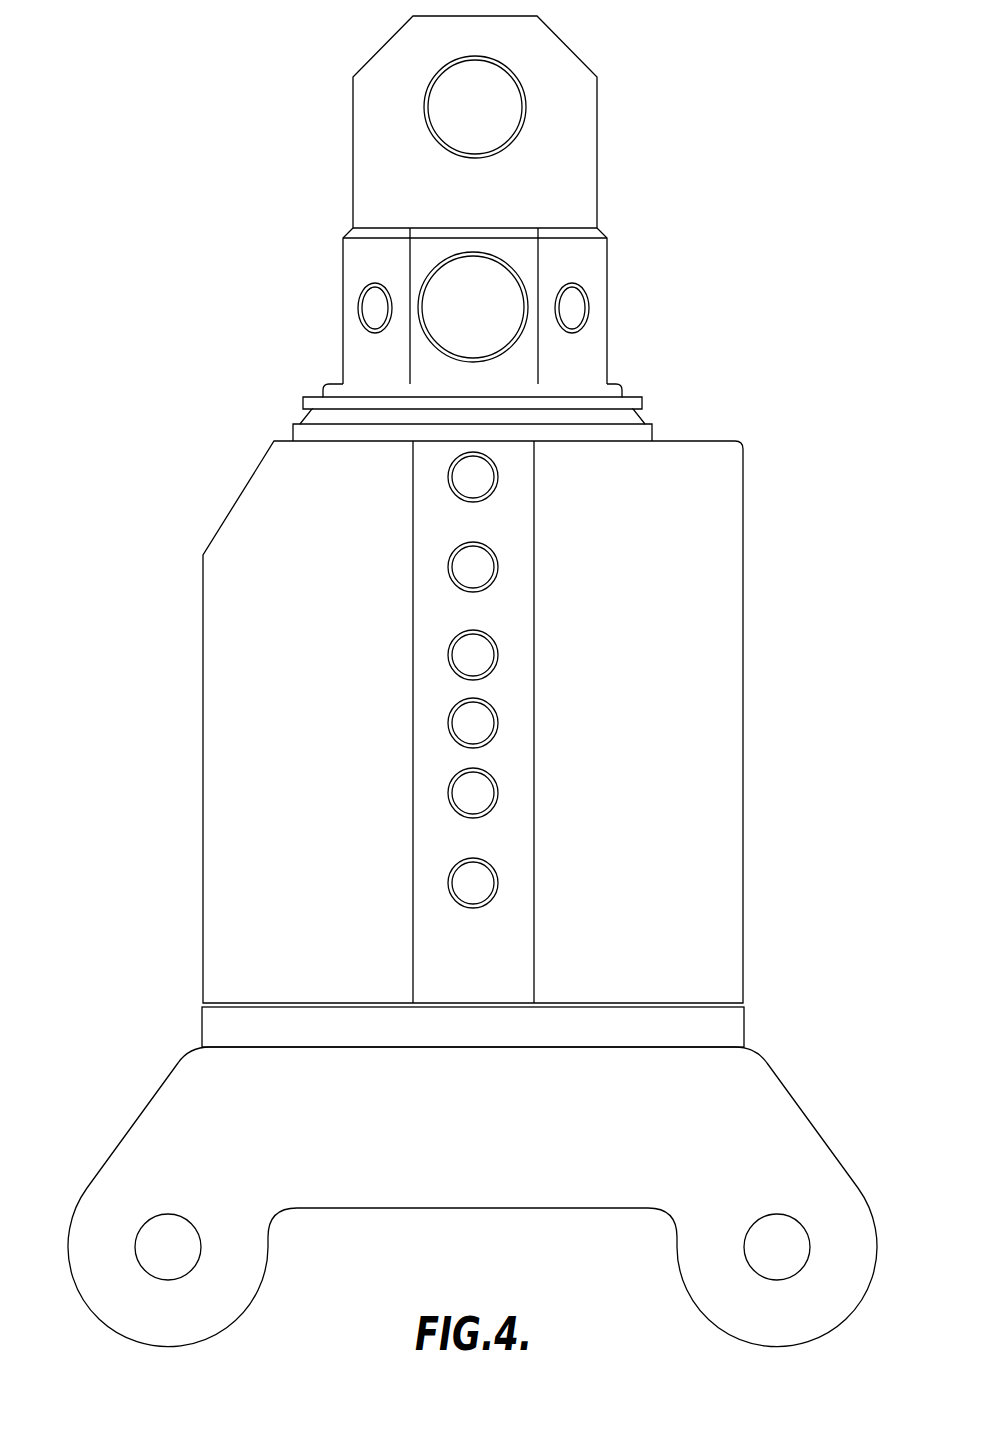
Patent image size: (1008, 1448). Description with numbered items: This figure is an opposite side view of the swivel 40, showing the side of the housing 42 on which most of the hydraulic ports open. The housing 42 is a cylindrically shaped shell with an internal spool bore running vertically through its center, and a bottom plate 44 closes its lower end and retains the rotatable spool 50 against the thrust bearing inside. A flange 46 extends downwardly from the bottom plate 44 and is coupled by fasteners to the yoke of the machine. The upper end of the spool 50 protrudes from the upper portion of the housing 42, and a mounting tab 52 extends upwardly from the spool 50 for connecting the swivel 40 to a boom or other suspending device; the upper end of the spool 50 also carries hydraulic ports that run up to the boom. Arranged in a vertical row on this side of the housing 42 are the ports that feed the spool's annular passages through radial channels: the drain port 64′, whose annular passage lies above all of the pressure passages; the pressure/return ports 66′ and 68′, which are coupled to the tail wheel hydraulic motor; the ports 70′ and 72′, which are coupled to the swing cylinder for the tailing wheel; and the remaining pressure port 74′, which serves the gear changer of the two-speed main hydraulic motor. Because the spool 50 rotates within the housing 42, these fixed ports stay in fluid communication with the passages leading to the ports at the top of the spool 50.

The swivel 40 is at (797, 383).
The housing 42 is at (255, 505).
The bottom plate 44 is at (213, 1025).
The flange 46 is at (772, 1115).
The spool 50 is at (600, 393).
The mounting tab 52 is at (577, 112).
The drain port 64′ is at (475, 479).
The pressure/return port 66′ is at (475, 567).
The port 70′ is at (475, 656).
The port 72′ is at (475, 724).
The pressure port 74′ is at (475, 794).
The pressure/return port 68′ is at (475, 884).